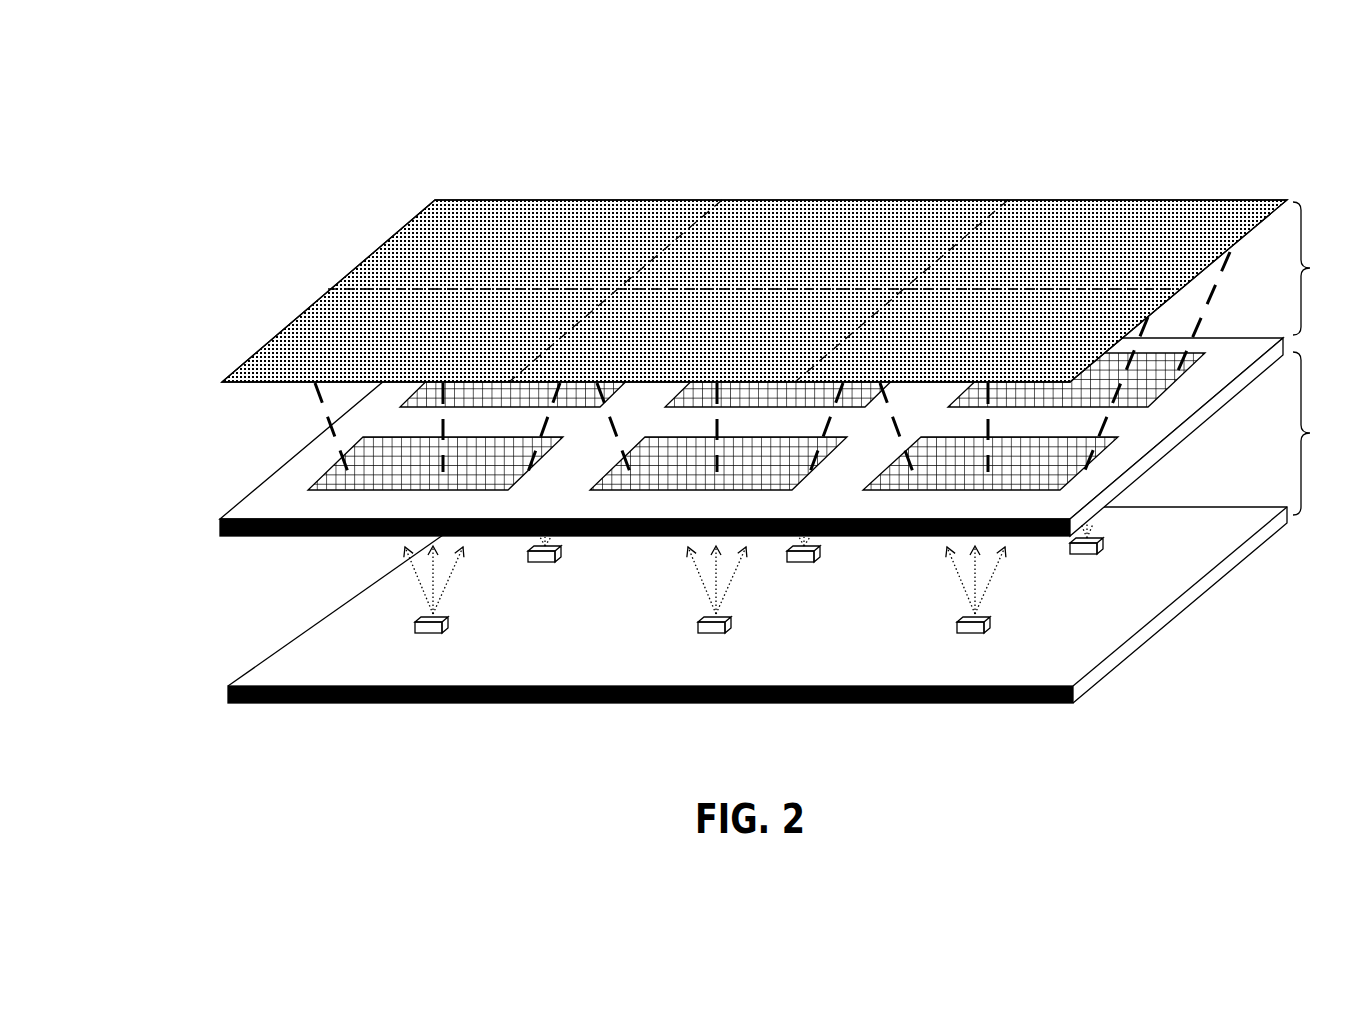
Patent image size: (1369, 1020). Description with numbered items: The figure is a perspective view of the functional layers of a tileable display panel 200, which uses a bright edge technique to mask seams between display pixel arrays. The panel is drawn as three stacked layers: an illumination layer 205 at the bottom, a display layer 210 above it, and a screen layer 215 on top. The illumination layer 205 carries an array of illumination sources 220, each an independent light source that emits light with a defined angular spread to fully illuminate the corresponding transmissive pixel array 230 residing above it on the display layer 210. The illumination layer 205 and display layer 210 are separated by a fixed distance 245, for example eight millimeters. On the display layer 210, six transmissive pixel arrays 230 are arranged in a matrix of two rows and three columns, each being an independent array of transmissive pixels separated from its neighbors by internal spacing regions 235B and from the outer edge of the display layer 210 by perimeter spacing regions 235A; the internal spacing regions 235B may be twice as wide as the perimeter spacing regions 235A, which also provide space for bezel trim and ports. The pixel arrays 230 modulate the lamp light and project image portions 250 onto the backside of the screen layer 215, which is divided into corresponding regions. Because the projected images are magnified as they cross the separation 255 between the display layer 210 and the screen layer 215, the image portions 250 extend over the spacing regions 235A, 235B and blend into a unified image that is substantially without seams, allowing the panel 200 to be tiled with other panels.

The tileable display panel 200 is at (720, 387).
The illumination layer 205 is at (283, 647).
The display layer 210 is at (269, 478).
The screen layer 215 is at (328, 290).
The illumination source 220 is at (424, 634).
The transmissive pixel array 230 is at (756, 421).
The perimeter spacing region 235A is at (1255, 363).
The internal spacing region 235B is at (938, 418).
The fixed distance 245 is at (1323, 433).
The image portion 250 is at (753, 291).
The separation 255 is at (1323, 268).